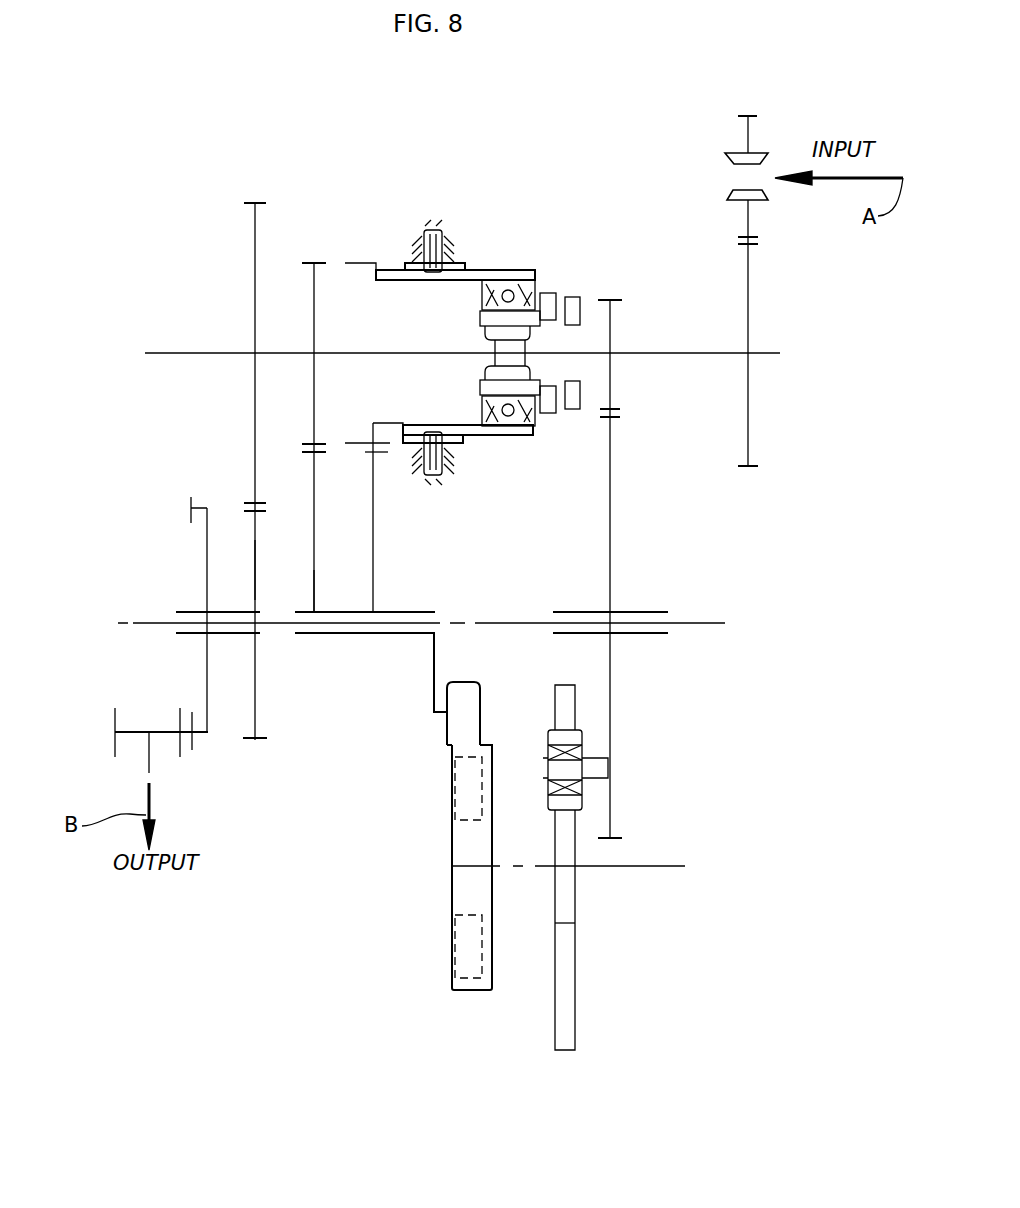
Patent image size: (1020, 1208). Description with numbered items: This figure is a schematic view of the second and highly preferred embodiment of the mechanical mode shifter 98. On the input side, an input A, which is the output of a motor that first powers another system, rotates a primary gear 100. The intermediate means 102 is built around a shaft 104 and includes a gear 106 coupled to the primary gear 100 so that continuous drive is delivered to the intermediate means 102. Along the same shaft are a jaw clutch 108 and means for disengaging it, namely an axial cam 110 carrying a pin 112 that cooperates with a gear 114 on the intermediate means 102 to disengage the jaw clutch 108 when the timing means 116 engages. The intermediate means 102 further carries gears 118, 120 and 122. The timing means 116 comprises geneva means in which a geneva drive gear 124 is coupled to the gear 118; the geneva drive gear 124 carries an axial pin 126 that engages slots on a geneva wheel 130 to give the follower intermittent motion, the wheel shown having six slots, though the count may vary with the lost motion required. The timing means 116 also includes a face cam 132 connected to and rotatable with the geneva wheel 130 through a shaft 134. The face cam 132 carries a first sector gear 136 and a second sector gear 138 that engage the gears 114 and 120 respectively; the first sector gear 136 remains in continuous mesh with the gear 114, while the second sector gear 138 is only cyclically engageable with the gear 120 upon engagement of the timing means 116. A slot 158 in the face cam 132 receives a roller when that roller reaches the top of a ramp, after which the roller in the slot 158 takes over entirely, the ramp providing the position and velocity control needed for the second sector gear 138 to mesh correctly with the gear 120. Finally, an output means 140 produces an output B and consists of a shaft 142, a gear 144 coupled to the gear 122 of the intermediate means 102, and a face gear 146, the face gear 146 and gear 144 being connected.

The mechanical mode shifter 98 is at (315, 127).
The primary gear 100 is at (760, 200).
The intermediate means 102 is at (570, 272).
The shaft 104 is at (655, 354).
The gear 106 is at (749, 340).
The jaw clutch 108 is at (573, 297).
The axial cam 110 is at (458, 258).
The pin 112 is at (432, 230).
The gear 114 is at (380, 278).
The timing means 116 is at (735, 739).
The gear 118 is at (611, 333).
The gear 120 is at (315, 331).
The gear 122 is at (255, 262).
The geneva drive gear 124 is at (611, 530).
The axial pin 126 is at (590, 765).
The geneva wheel 130 is at (565, 690).
The face cam 132 is at (452, 846).
The shaft 134 is at (656, 866).
The first sector gear 136 is at (374, 520).
The second sector gear 138 is at (314, 578).
The output means 140 is at (225, 783).
The shaft 142 is at (142, 623).
The gear 144 is at (255, 570).
The face gear 146 is at (207, 544).
The slot 158 is at (455, 790).